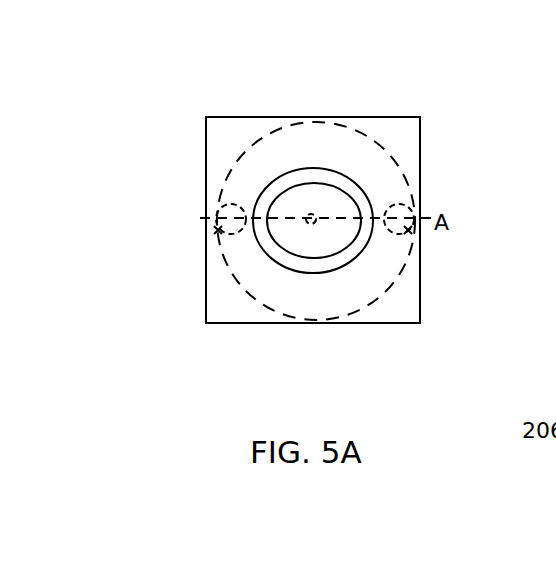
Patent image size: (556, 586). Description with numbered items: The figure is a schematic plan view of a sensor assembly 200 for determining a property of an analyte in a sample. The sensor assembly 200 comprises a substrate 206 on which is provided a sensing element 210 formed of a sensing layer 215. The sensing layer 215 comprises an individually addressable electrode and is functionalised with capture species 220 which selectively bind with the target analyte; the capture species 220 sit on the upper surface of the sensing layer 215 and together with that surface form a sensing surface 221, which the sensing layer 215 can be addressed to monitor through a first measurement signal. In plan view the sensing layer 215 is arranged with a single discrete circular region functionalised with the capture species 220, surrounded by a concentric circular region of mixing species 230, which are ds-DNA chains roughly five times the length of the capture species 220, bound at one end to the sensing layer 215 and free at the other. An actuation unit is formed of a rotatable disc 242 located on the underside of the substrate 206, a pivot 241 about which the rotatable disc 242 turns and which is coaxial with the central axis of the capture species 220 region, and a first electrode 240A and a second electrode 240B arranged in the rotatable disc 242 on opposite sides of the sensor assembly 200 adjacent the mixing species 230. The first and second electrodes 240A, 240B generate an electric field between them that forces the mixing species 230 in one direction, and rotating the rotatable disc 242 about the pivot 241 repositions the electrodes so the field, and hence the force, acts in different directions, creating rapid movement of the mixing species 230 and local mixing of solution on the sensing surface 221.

The sensor assembly 200 is at (192, 107).
The substrate 206 is at (227, 285).
The sensing element 210 is at (258, 193).
The sensing layer 215 is at (363, 250).
The capture species 220 is at (342, 206).
The sensing surface 221 is at (322, 197).
The mixing species 230 is at (316, 272).
The first electrode 240A is at (218, 230).
The second electrode 240B is at (413, 233).
The pivot 241 is at (302, 238).
The rotatable disc 242 is at (405, 192).